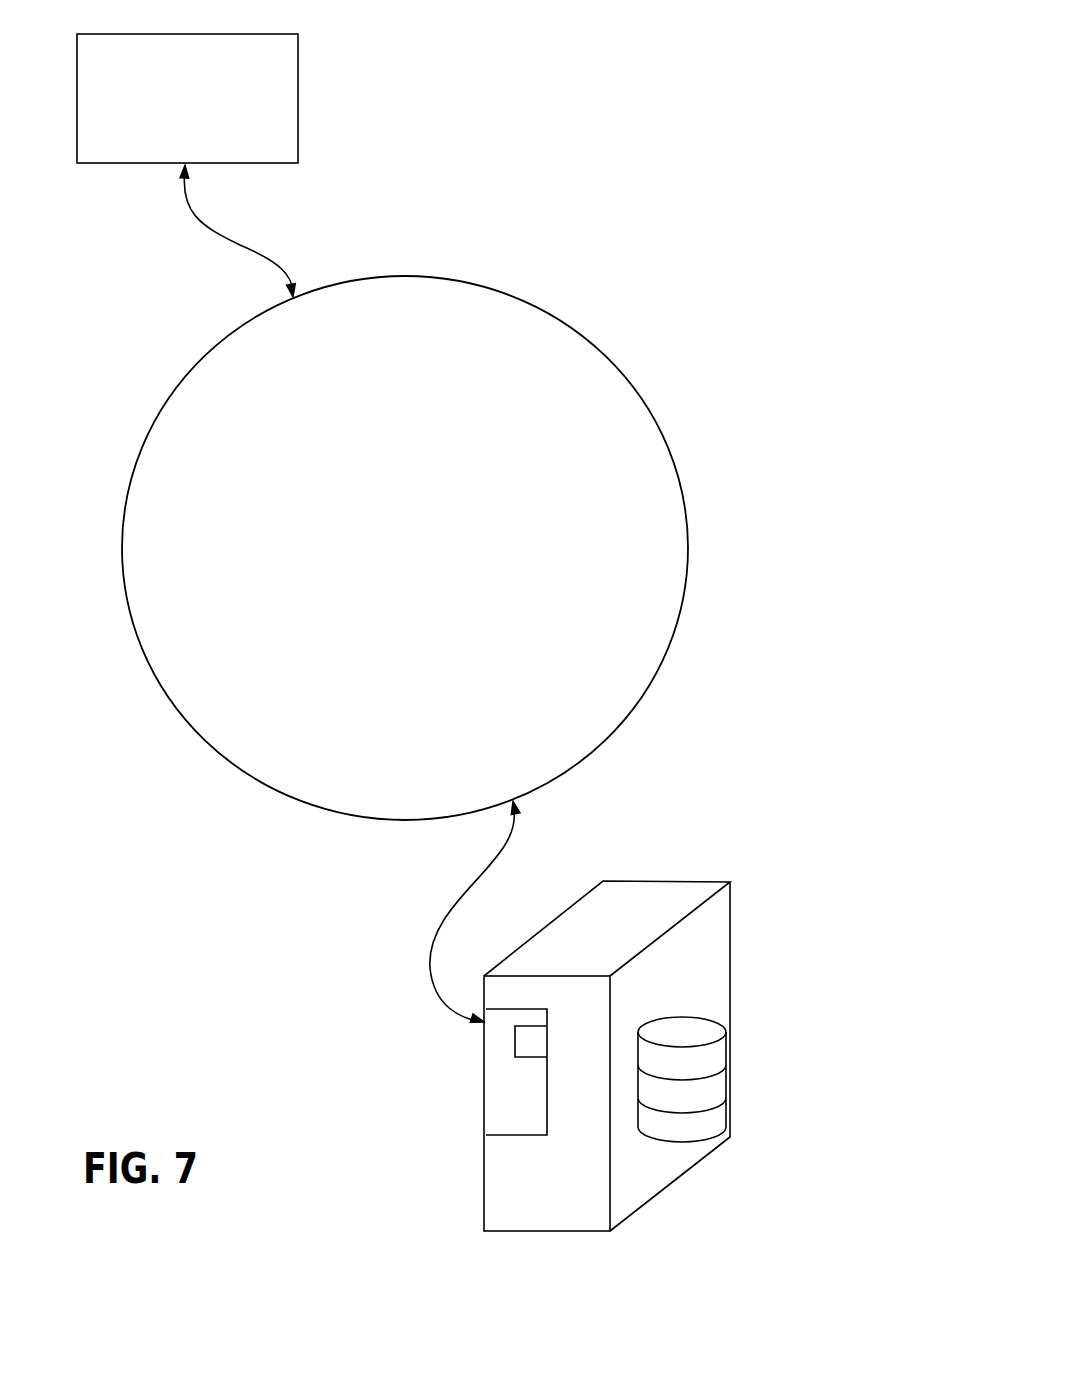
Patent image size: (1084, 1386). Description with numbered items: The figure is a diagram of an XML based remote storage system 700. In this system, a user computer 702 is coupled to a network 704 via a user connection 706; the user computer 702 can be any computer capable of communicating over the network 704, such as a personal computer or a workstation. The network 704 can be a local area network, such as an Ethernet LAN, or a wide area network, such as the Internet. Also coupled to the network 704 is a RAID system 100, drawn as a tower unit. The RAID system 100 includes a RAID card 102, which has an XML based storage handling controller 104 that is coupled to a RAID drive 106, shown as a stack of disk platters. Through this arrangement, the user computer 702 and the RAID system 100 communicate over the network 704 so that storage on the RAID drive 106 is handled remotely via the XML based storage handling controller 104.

The XML based remote storage system 700 is at (603, 41).
The user computer 702 is at (300, 97).
The network 704 is at (630, 373).
The user connection 706 is at (205, 237).
The RAID system 100 is at (699, 870).
The RAID card 102 is at (482, 1054).
The XML based storage handling controller 104 is at (524, 1051).
The RAID drive 106 is at (711, 1131).